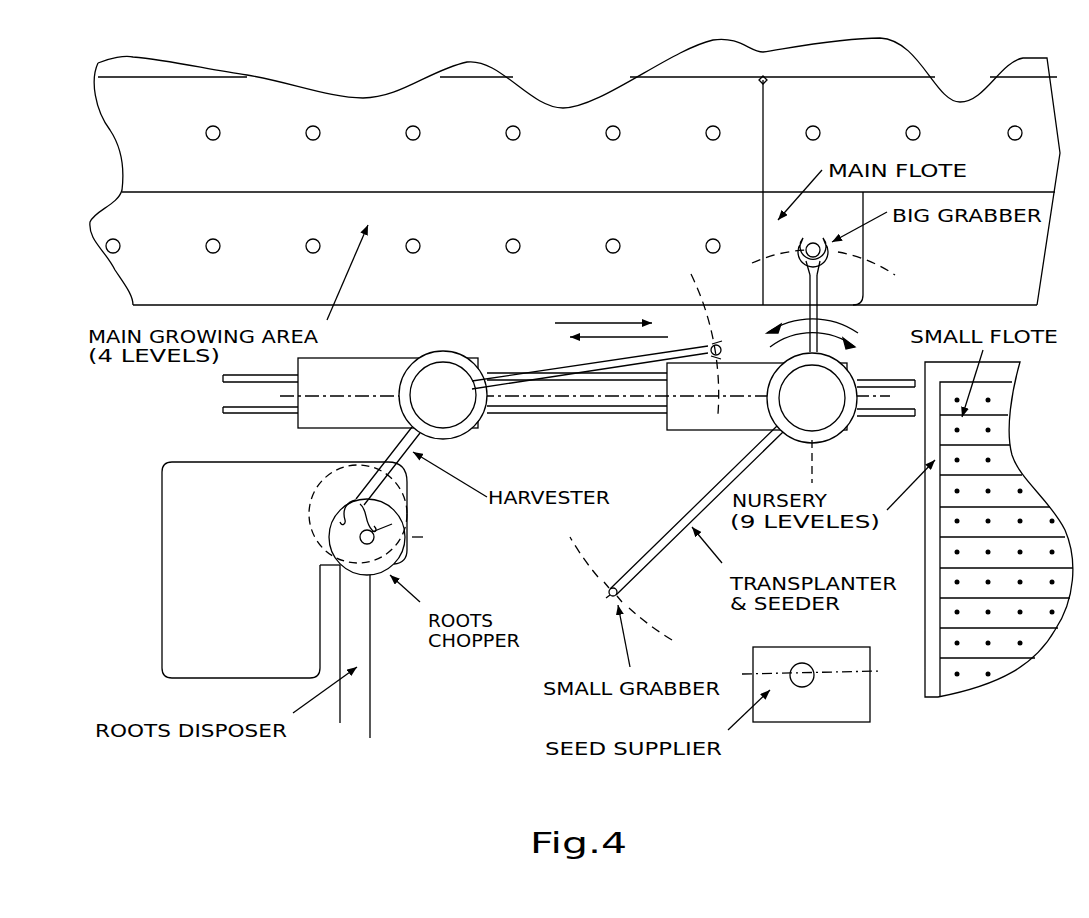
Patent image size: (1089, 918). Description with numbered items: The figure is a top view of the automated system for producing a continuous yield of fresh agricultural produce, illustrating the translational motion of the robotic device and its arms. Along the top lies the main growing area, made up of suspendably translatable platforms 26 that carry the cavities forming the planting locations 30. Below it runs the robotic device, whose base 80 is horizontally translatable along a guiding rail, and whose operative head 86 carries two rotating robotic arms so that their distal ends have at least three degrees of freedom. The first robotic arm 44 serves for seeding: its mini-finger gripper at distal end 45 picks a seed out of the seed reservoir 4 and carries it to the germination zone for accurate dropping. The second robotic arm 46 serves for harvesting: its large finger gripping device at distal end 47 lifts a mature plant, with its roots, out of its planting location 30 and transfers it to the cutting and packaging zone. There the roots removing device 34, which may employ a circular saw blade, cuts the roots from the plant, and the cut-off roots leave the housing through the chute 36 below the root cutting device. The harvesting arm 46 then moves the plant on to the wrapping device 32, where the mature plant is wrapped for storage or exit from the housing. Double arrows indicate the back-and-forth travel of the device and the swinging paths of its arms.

The seed reservoir 4 is at (805, 723).
The suspendably translatable platform 26 is at (137, 265).
The planting location 30 is at (303, 253).
The wrapping device 32 is at (162, 542).
The roots removing device 34 is at (382, 578).
The chute 36 is at (372, 698).
The robotic arm 44 is at (663, 547).
The distal end of robotic arm 45 is at (707, 345).
The second robotic arm 46 is at (818, 292).
The distal end of second robotic arm 47 is at (806, 247).
The base 80 is at (348, 368).
The operative head 86 is at (457, 428).